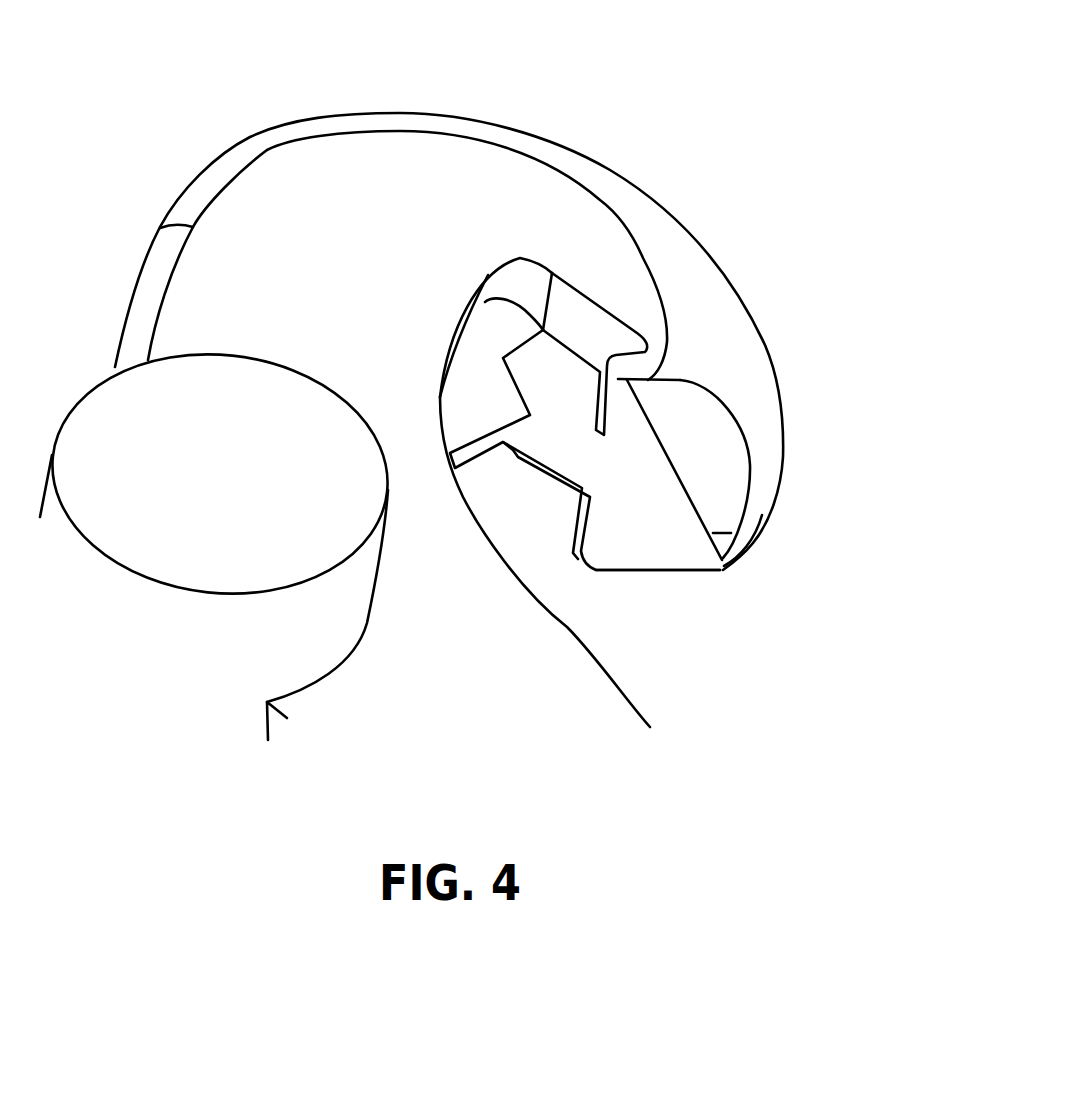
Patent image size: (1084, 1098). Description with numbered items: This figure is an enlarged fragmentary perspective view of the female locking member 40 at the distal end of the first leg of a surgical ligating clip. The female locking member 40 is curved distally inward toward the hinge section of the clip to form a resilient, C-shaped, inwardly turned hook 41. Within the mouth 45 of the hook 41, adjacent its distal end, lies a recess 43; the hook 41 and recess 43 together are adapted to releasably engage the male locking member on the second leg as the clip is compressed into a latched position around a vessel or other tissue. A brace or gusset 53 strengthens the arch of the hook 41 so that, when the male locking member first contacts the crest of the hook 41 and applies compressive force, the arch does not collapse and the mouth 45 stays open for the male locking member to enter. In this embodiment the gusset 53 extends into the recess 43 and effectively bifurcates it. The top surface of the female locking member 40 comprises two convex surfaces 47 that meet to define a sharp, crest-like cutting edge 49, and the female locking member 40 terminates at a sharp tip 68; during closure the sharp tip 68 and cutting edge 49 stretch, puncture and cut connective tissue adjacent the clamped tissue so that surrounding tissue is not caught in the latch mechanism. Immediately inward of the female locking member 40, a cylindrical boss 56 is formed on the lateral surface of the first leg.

The female locking member 40 is at (814, 316).
The hook 41 is at (631, 148).
The recess 43 is at (605, 335).
The mouth 45 is at (443, 297).
The convex surfaces 47 is at (710, 305).
The cutting edge 49 is at (783, 457).
The gusset 53 is at (485, 413).
The cylindrical boss 56 is at (105, 437).
The sharp tip 68 is at (723, 570).